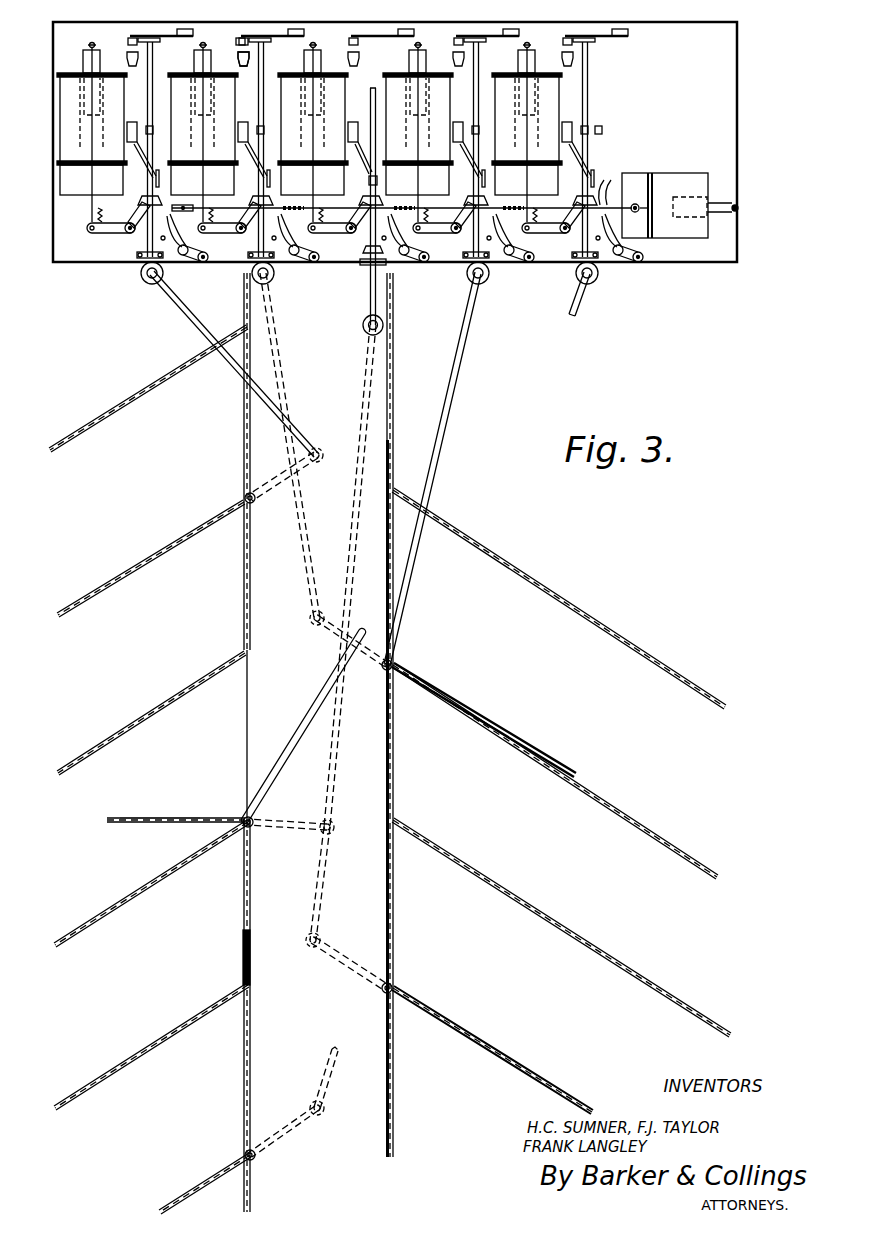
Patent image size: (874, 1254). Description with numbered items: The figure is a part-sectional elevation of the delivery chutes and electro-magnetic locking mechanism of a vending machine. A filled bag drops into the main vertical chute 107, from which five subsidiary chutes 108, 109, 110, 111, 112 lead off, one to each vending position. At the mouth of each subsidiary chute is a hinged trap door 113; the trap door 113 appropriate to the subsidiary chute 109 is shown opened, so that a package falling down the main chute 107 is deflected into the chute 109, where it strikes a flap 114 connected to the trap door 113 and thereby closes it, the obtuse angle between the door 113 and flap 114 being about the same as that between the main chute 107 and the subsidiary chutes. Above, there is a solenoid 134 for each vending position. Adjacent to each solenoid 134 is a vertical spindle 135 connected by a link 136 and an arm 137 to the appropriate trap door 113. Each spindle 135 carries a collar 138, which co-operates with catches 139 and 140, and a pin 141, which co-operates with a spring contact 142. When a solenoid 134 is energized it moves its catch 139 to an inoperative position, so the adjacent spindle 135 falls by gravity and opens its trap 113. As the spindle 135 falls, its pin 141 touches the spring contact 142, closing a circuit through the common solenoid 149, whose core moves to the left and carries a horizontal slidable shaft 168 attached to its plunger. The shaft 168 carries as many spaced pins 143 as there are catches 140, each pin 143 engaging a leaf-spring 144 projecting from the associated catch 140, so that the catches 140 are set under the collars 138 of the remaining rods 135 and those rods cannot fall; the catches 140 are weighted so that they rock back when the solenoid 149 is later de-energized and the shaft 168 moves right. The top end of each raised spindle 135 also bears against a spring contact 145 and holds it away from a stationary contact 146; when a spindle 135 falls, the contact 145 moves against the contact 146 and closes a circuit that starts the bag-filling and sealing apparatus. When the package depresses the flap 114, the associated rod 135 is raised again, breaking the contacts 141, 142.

The vertical chute 107 is at (384, 1090).
The subsidiary chute 108 is at (152, 742).
The subsidiary chute 109 is at (152, 824).
The subsidiary chute 110 is at (205, 1185).
The subsidiary chute 111 is at (559, 683).
The subsidiary chute 112 is at (561, 966).
The trap door 113 is at (303, 728).
The flap 114 is at (143, 824).
The solenoid 134 is at (90, 148).
The vertical spindle 135 is at (352, 135).
The link 136 is at (380, 388).
The arm 137 is at (277, 831).
The collar 138 is at (393, 298).
The catch 139 is at (342, 250).
The catch 140 is at (384, 250).
The pin 141 is at (378, 180).
The spring contact 142 is at (356, 135).
The pin 143 is at (603, 205).
The leaf-spring 144 is at (636, 250).
The spring contact 145 is at (252, 46).
The stationary contact 146 is at (233, 47).
The common solenoid 149 is at (680, 186).
The horizontal slidable shaft 168 is at (650, 172).